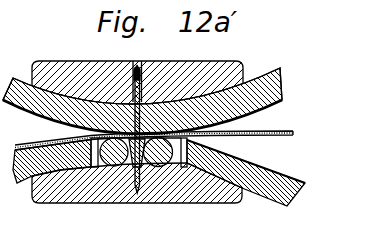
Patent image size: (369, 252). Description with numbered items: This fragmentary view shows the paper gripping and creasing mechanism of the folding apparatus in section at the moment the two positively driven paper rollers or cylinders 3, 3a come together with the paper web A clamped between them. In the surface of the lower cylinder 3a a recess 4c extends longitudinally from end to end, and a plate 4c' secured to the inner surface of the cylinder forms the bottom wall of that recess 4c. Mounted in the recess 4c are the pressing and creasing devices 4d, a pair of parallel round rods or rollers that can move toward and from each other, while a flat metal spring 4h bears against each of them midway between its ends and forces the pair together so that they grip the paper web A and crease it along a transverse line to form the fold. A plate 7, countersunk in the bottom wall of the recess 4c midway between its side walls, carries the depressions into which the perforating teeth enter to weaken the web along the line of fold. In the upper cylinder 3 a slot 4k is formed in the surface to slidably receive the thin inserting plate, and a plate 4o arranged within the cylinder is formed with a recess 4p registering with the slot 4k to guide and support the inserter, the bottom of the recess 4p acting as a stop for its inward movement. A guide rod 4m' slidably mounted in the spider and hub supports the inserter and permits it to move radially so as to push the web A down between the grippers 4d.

The paper roller or cylinder 3 is at (152, 100).
The paper roller or cylinder 3a is at (175, 173).
The plate 4o is at (243, 64).
The plate 4c' is at (137, 200).
The recess 4c is at (246, 161).
The slot 4k is at (245, 122).
The guide rod 4m' is at (107, 72).
The recess 4p is at (138, 66).
The spring 4h is at (84, 166).
The pressing and creasing devices 4d is at (103, 168).
The plate 7 is at (137, 193).
The paper web A is at (296, 132).